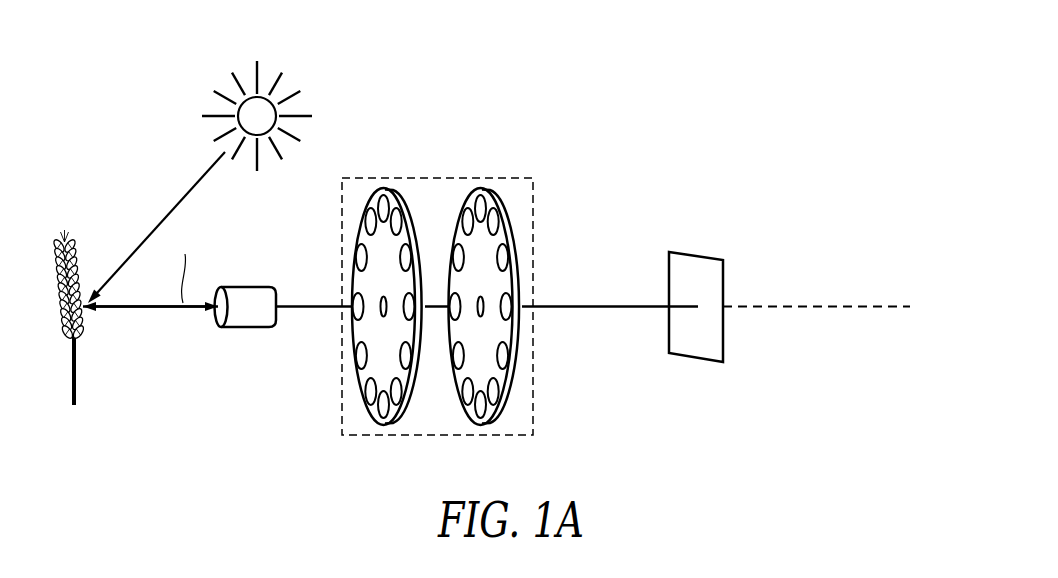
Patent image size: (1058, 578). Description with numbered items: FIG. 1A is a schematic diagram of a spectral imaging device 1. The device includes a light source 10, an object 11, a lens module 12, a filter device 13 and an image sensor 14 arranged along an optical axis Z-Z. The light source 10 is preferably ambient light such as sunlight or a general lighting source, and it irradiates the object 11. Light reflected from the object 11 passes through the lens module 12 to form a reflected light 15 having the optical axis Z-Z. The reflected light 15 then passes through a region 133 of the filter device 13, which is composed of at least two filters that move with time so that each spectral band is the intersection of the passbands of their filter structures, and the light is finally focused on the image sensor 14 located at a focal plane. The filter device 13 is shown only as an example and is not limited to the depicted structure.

The spectral imaging device 1 is at (923, 34).
The light source 10 is at (264, 92).
The object 11 is at (72, 243).
The lens module 12 is at (247, 287).
The filter device 13 is at (452, 162).
The region 133 is at (355, 318).
The image sensor 14 is at (692, 252).
The reflected light 15 is at (149, 311).